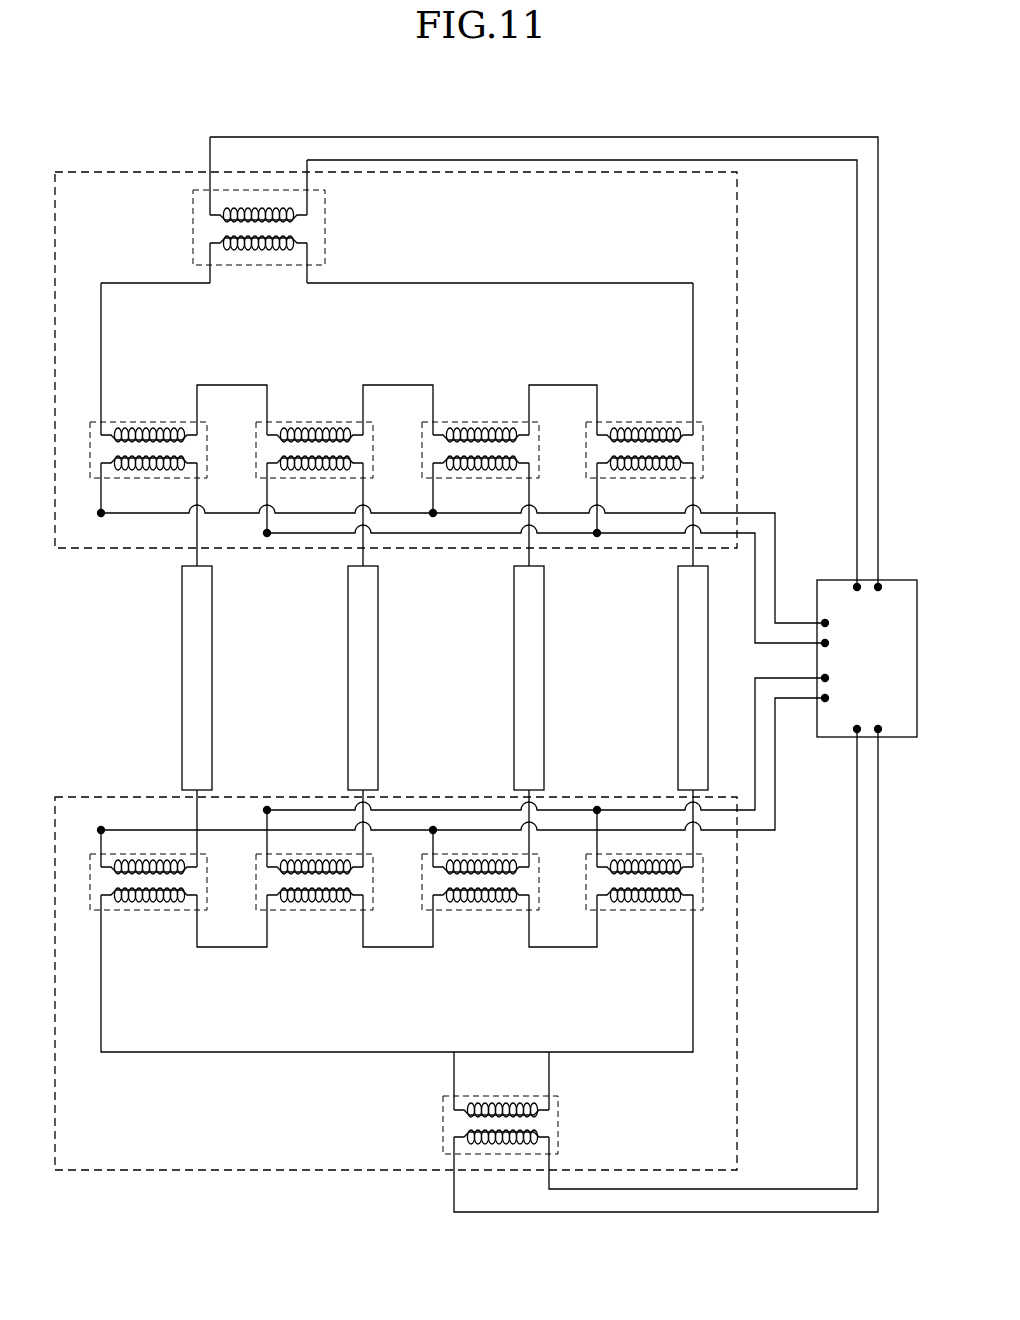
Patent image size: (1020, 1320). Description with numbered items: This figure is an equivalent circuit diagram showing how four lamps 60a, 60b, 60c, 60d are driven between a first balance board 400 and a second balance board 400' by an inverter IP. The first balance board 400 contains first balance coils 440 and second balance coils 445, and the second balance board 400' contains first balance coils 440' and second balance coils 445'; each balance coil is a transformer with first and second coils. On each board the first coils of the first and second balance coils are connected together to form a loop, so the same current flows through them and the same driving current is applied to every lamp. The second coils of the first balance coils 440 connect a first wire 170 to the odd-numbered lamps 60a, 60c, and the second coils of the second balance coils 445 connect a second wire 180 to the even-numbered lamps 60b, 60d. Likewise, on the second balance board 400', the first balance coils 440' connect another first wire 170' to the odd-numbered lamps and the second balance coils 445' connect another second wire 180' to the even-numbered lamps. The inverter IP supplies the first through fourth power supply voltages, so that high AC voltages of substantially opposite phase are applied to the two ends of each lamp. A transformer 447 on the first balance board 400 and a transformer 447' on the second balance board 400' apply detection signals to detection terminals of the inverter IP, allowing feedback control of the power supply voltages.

The first balance board 400 is at (396, 317).
The transformer 447 is at (216, 210).
The first balance coils 440 is at (382, 418).
The second balance coils 445 is at (447, 511).
The first wire 170 is at (469, 564).
The second wire 180 is at (552, 584).
The odd-numbered lamp 60a is at (182, 684).
The even-numbered lamp 60b is at (348, 684).
The odd-numbered lamp 60c is at (514, 684).
The even-numbered lamp 60d is at (678, 684).
The inverter IP is at (900, 598).
The second balance board 400' is at (396, 1028).
The transformer 447' is at (458, 1125).
The first balance coils 440' is at (384, 913).
The second balance coils 445' is at (449, 858).
The first wire 170' is at (471, 766).
The second wire 180' is at (554, 746).